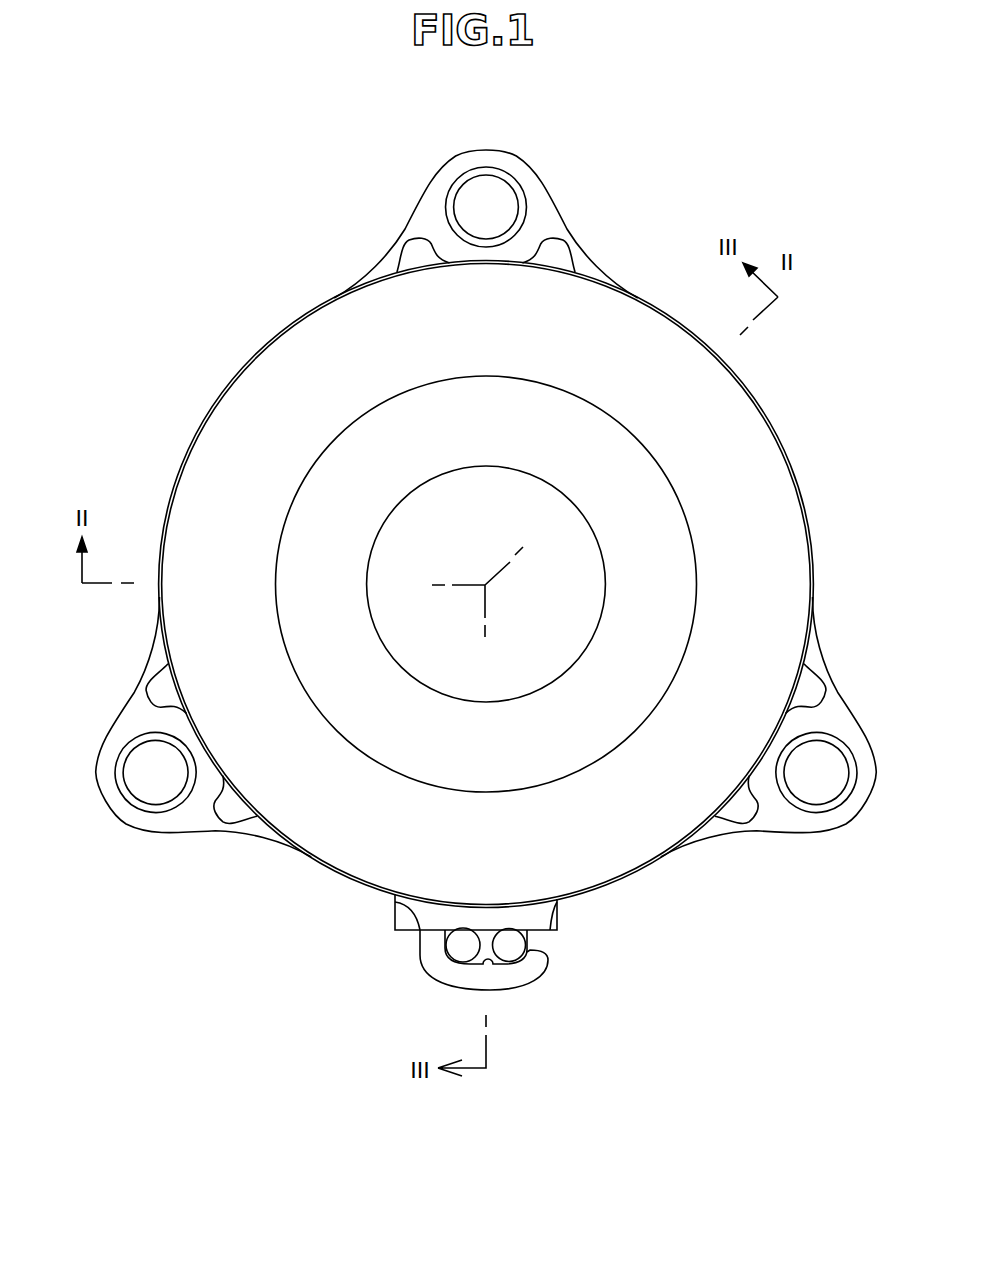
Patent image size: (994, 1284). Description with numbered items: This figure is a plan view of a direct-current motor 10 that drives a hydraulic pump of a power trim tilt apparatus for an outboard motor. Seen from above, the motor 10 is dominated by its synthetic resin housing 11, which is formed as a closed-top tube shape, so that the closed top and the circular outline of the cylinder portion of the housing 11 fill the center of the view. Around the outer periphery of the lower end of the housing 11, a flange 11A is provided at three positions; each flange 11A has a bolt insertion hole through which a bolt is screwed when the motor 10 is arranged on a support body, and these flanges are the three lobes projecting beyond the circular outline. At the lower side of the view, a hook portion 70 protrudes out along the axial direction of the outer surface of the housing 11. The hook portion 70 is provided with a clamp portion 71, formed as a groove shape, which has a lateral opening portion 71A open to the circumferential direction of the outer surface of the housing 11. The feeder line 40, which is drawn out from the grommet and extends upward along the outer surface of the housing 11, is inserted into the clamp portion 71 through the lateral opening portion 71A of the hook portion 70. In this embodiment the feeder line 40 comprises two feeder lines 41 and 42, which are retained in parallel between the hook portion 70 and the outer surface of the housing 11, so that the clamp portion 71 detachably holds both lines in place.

The direct-current motor 10 is at (240, 365).
The housing 11 is at (184, 455).
The flange 11A is at (131, 720).
The feeder line 40 is at (523, 927).
The feeder line 41 is at (465, 945).
The feeder line 42 is at (508, 943).
The hook portion 70 is at (420, 971).
The clamp portion 71 is at (500, 966).
The lateral opening portion 71A is at (535, 952).